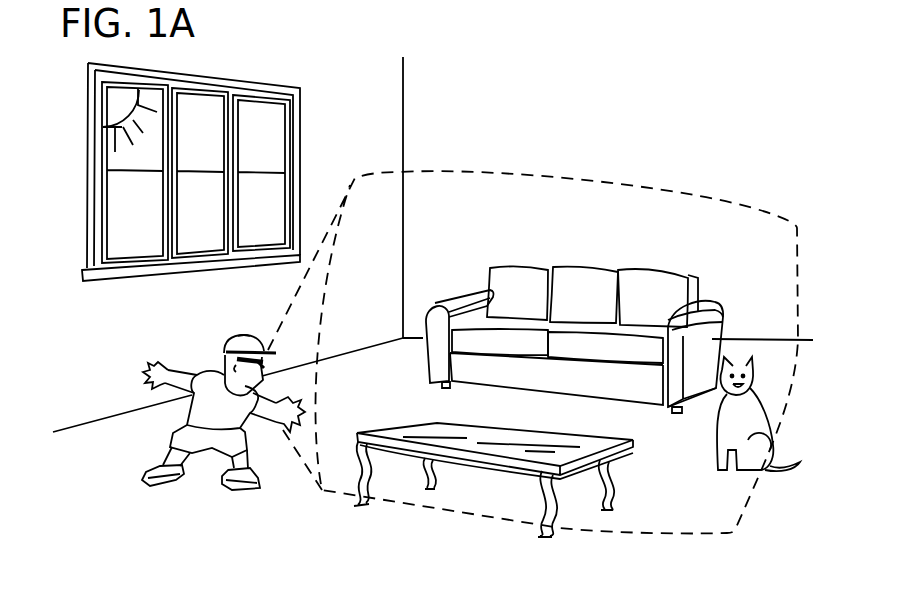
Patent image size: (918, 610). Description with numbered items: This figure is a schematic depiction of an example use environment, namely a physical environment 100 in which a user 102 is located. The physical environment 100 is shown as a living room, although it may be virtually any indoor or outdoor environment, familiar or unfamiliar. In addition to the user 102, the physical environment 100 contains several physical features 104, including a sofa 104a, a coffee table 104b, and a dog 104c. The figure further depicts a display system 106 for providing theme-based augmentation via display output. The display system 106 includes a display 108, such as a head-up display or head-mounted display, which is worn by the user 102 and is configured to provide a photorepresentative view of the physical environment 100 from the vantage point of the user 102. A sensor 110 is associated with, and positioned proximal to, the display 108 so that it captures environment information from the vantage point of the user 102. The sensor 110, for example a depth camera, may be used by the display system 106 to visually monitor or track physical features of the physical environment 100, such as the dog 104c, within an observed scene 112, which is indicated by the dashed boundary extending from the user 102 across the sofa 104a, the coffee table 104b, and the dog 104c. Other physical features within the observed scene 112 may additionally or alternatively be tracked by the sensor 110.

The physical environment 100 is at (553, 91).
The user 102 is at (232, 422).
The physical features 104 is at (548, 236).
The sofa 104a is at (670, 275).
The coffee table 104b is at (617, 473).
The dog 104c is at (717, 407).
The display system 106 is at (278, 361).
The display 108 is at (224, 343).
The sensor 110 is at (242, 337).
The observed scene 112 is at (694, 192).